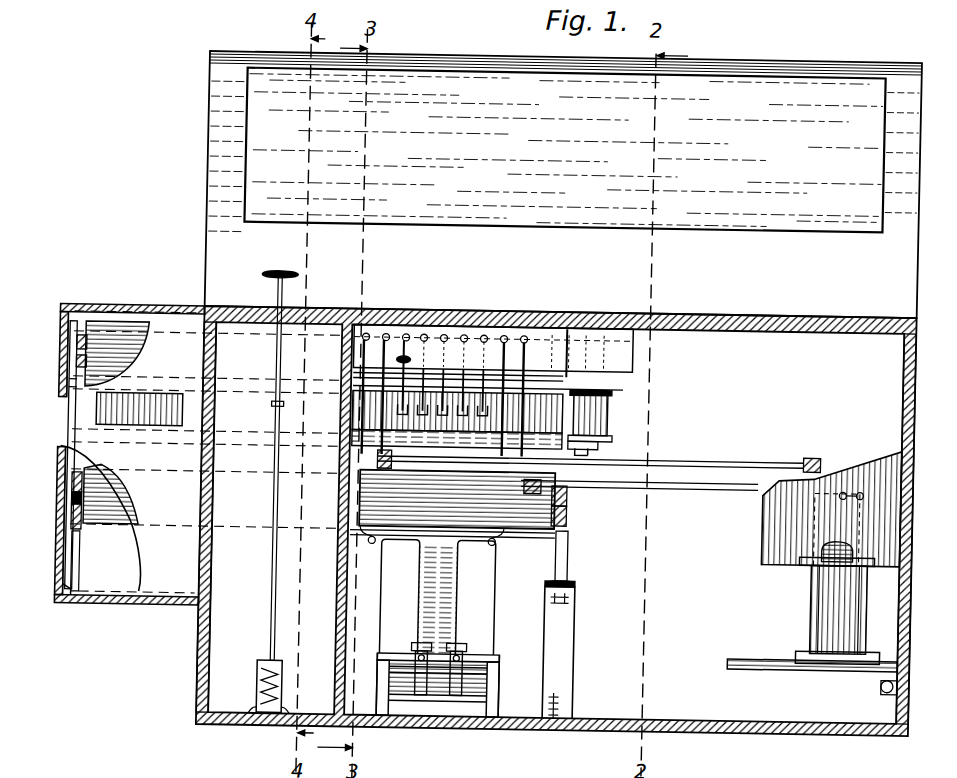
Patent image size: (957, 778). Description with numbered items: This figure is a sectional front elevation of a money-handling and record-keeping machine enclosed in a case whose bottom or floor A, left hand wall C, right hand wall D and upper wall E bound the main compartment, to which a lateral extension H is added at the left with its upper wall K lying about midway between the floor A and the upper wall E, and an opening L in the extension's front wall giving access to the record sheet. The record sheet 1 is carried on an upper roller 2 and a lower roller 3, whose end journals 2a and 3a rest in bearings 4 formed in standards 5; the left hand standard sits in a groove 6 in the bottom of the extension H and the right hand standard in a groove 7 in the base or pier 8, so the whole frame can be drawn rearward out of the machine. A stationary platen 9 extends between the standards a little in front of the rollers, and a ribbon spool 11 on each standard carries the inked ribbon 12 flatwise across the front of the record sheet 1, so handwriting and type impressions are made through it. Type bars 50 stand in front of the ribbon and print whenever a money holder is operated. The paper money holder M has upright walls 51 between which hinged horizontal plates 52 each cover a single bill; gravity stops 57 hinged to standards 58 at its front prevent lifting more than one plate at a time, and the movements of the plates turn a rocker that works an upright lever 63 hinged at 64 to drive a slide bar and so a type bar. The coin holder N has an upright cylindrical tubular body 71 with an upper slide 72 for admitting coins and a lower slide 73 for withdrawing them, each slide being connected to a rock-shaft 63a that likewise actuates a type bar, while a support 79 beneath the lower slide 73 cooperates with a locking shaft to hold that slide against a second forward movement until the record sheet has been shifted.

The record sheet 1 is at (100, 539).
The upper roller 2 is at (120, 331).
The end journal 2a is at (46, 349).
The lower roller 3 is at (110, 509).
The end journal 3a is at (304, 493).
The bearing 4 is at (301, 459).
The standard 5 is at (368, 515).
The groove 6 is at (37, 579).
The groove 7 is at (571, 650).
The base or pier 8 is at (571, 667).
The stationary platen 9 is at (319, 424).
The ribbon spool 11 is at (406, 355).
The ribbon 12 is at (606, 435).
The type bar 50 is at (360, 493).
The upright wall 51 is at (437, 685).
The horizontal plate 52 is at (457, 652).
The gravity stop 57 is at (487, 652).
The standard 58 is at (405, 654).
The upright lever 63 is at (451, 563).
The rock-shaft 63a is at (599, 466).
The hinge 64 is at (437, 553).
The cylindrical tubular body 71 is at (852, 609).
The upper slide 72 is at (818, 576).
The lower slide 73 is at (832, 678).
The support 79 is at (804, 682).
The bottom or floor A is at (492, 673).
The left hand wall C is at (185, 516).
The right hand wall D is at (920, 529).
The upper wall E is at (564, 175).
The lateral extension H is at (175, 455).
The upper wall K is at (78, 433).
The opening L is at (138, 426).
The paper money holder M is at (437, 686).
The coin holder N is at (831, 536).